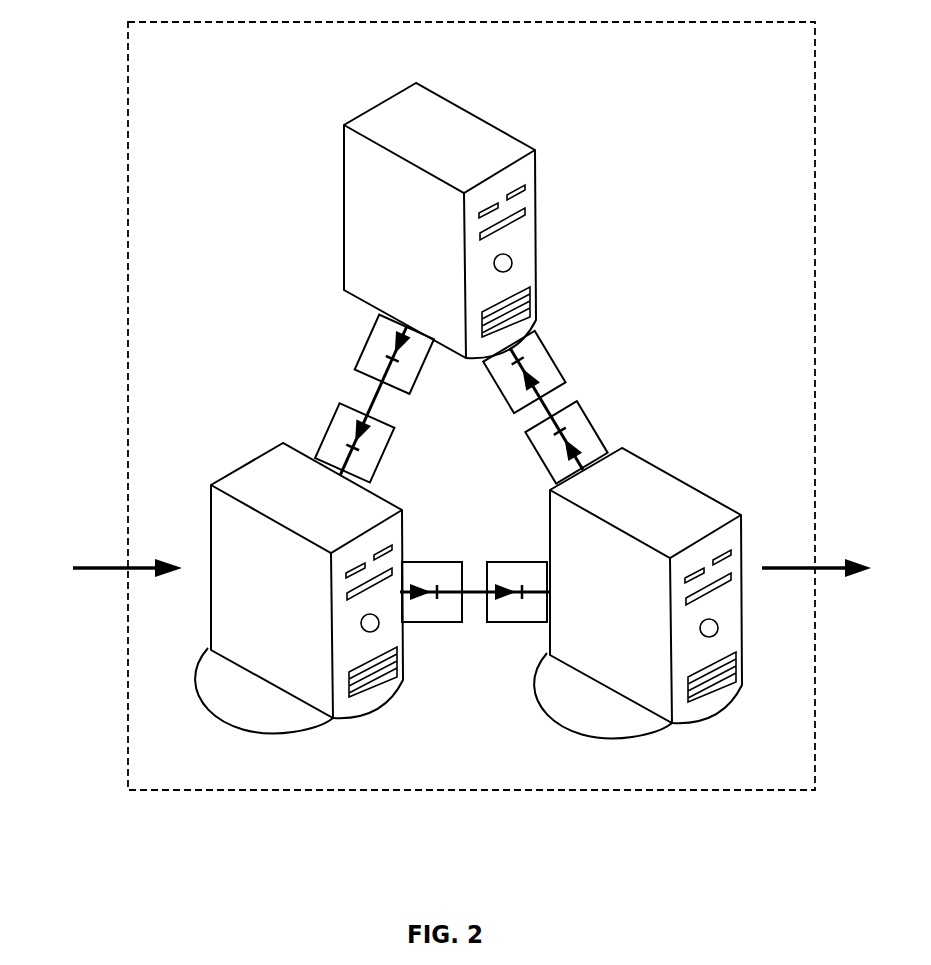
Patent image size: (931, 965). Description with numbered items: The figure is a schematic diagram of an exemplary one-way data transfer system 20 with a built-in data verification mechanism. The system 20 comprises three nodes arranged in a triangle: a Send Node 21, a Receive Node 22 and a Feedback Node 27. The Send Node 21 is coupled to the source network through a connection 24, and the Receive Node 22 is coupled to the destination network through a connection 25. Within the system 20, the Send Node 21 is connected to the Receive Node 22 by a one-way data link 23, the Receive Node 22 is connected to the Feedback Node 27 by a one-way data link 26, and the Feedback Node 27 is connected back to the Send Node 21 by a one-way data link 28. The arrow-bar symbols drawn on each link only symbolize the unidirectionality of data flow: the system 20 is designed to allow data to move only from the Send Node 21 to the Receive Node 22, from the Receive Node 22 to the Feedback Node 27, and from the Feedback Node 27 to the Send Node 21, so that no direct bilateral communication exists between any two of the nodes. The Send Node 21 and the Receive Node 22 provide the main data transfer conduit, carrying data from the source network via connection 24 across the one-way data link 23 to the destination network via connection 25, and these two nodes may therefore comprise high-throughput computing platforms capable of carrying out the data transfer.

The one-way data transfer system 20 is at (765, 21).
The Send Node 21 is at (257, 470).
The Receive Node 22 is at (670, 485).
The Feedback Node 27 is at (440, 113).
The one-way data link 23 is at (478, 597).
The one-way data link 26 is at (553, 403).
The one-way data link 28 is at (368, 400).
The connection 24 is at (118, 567).
The connection 25 is at (803, 567).